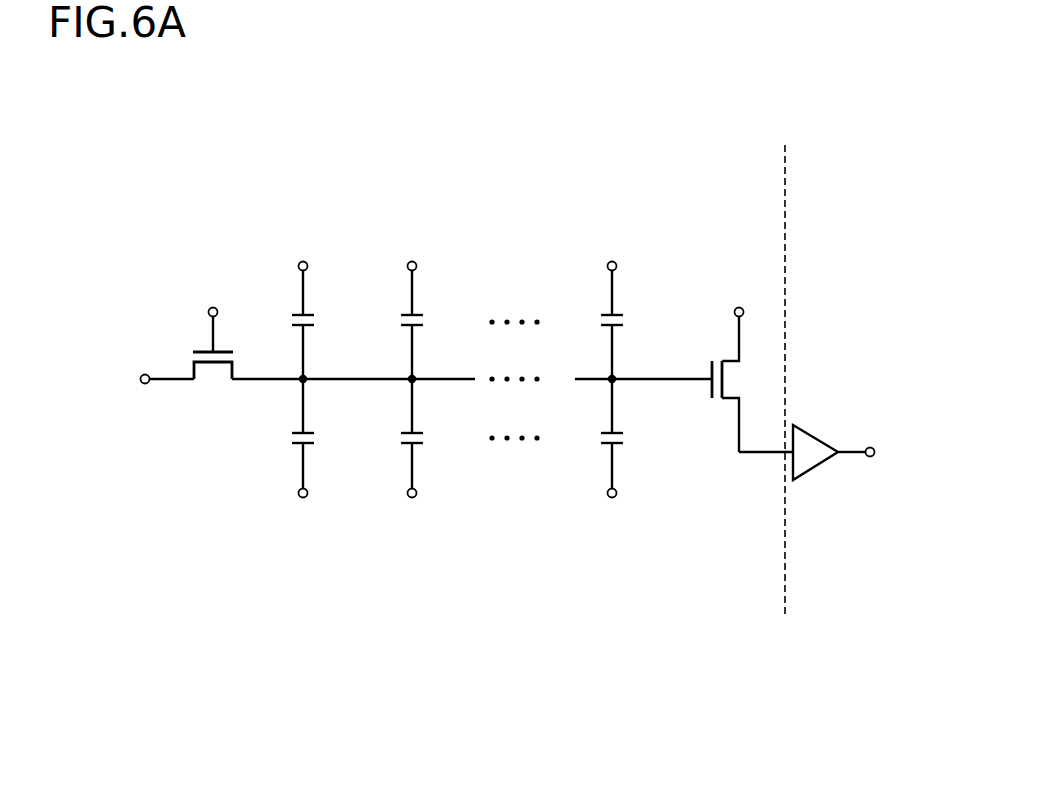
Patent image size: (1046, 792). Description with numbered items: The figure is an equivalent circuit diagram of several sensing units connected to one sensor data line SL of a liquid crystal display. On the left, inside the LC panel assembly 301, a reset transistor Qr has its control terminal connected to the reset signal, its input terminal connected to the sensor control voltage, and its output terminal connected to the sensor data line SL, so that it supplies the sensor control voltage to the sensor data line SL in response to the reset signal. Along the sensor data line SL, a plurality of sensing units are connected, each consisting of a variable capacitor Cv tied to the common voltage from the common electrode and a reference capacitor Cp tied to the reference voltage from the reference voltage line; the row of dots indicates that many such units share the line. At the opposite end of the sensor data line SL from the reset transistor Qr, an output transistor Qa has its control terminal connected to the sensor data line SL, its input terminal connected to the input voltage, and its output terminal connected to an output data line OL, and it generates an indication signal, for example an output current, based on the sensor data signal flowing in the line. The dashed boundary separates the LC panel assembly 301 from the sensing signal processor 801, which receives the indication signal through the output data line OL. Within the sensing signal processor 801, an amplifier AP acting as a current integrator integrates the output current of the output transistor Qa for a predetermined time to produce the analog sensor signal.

The LC panel assembly 301 is at (785, 160).
The sensing signal processor 801 is at (785, 180).
The reset transistor Qr is at (214, 345).
The output transistor Qa is at (741, 366).
The variable capacitor Cv is at (474, 325).
The reference capacitor Cp is at (475, 444).
The sensor data line SL is at (258, 382).
The output data line OL is at (758, 454).
The amplifier AP is at (815, 460).